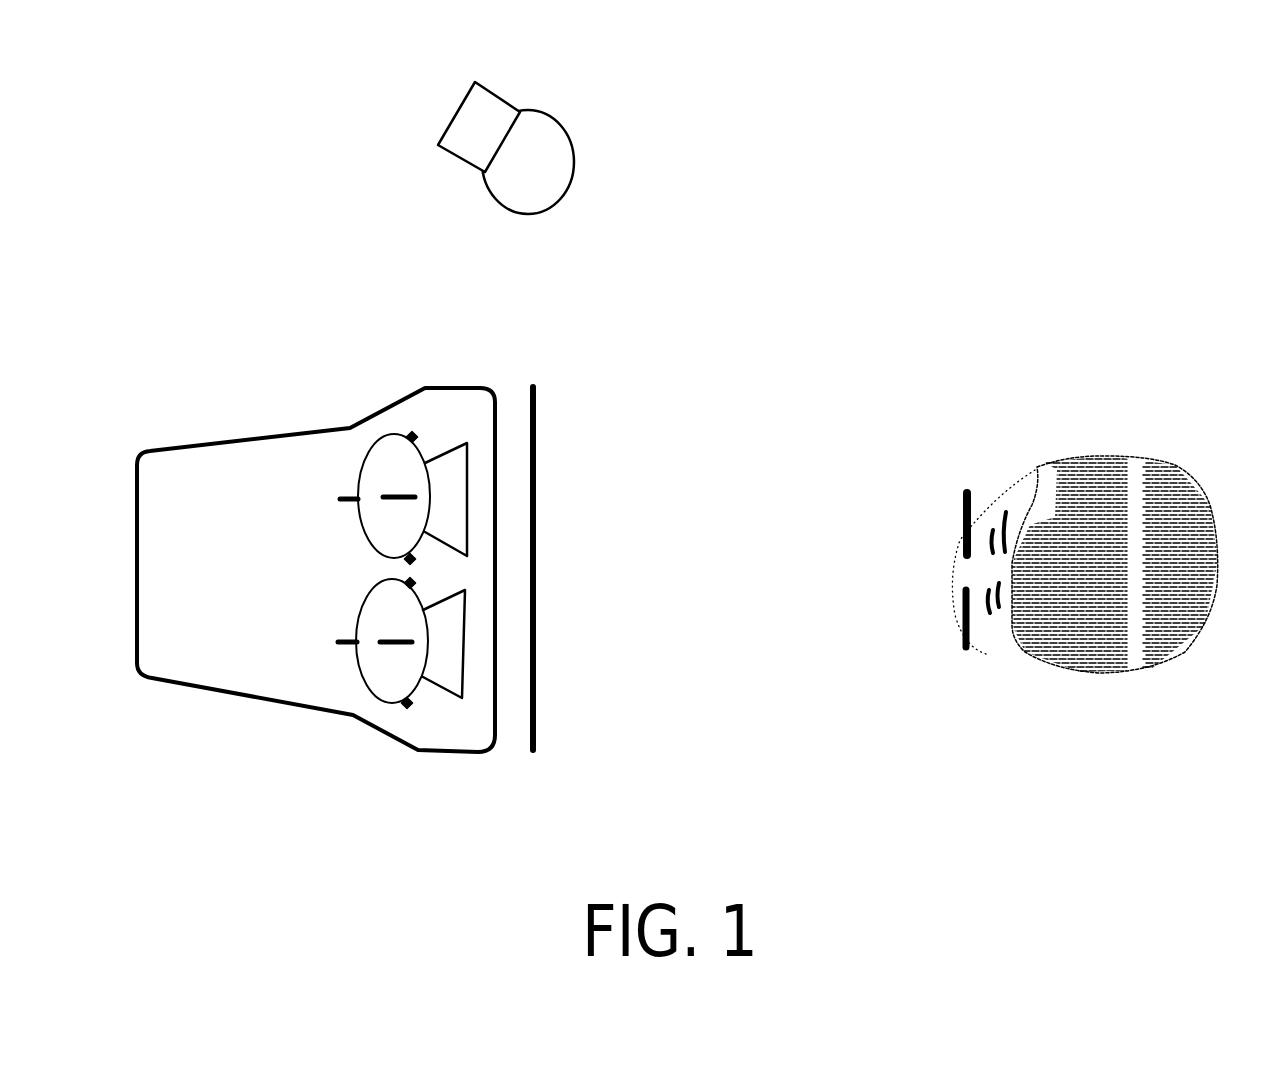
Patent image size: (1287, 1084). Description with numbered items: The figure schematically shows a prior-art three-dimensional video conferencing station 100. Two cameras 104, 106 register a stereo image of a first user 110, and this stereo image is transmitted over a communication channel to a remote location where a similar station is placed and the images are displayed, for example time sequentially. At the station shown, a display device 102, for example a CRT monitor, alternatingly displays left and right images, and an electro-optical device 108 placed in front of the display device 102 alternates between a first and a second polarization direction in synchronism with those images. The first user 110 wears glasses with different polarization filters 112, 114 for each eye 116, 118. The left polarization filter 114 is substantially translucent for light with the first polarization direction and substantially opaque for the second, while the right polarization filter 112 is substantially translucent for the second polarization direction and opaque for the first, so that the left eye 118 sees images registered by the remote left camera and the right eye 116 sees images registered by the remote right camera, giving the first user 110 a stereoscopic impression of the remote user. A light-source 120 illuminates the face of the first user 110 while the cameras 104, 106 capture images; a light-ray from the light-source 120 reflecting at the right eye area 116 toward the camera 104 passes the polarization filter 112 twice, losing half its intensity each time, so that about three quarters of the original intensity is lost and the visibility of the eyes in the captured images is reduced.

The 3D video conferencing station 100 is at (813, 273).
The display device 102 is at (248, 457).
The camera 104 is at (398, 452).
The camera 106 is at (383, 675).
The electro-optical device 108 is at (533, 735).
The first user 110 is at (1177, 467).
The right polarization filter 112 is at (963, 530).
The left polarization filter 114 is at (961, 625).
The right eye 116 is at (997, 528).
The left eye 118 is at (997, 617).
The light-source 120 is at (548, 128).